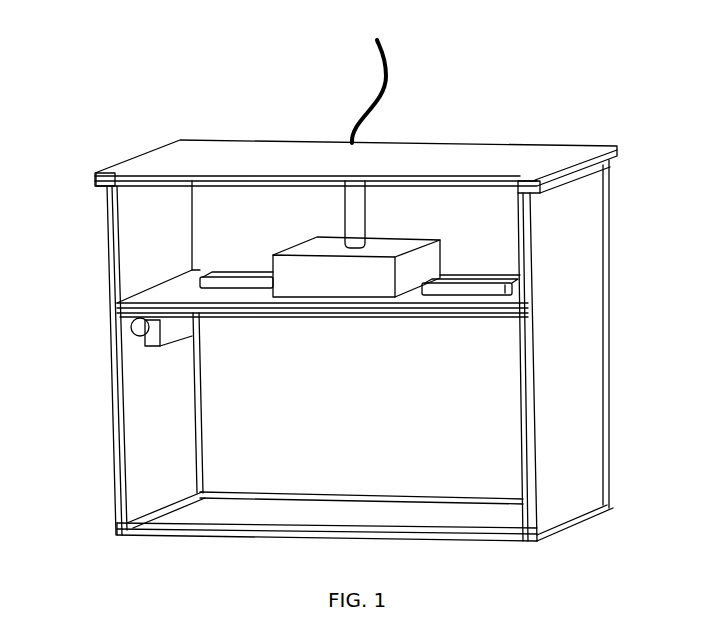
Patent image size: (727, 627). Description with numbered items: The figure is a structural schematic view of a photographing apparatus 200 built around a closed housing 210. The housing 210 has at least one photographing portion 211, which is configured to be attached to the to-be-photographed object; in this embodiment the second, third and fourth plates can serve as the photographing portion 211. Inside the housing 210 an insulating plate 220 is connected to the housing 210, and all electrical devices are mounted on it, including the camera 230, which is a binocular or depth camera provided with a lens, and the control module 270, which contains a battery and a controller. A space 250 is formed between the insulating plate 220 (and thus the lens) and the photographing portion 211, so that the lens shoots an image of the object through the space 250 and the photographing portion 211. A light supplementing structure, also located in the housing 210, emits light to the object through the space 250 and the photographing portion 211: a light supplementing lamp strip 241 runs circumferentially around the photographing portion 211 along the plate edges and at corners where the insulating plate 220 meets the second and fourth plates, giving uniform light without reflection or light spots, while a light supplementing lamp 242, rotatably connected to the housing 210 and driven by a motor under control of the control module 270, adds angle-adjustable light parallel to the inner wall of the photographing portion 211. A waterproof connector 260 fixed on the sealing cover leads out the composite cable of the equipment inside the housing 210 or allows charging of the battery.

The photographing apparatus 200 is at (467, 61).
The housing 210 is at (162, 158).
The photographing portion 211 is at (150, 405).
The insulating plate 220 is at (180, 292).
The camera 230 is at (117, 303).
The light supplementing lamp strip 241 is at (122, 307).
The light supplementing lamp 242 is at (130, 328).
The space 250 is at (415, 385).
The waterproof connector 260 is at (350, 143).
The control module 270 is at (293, 248).